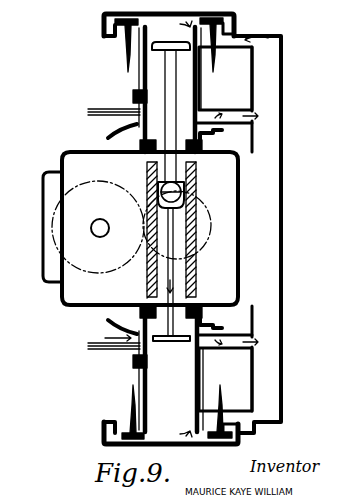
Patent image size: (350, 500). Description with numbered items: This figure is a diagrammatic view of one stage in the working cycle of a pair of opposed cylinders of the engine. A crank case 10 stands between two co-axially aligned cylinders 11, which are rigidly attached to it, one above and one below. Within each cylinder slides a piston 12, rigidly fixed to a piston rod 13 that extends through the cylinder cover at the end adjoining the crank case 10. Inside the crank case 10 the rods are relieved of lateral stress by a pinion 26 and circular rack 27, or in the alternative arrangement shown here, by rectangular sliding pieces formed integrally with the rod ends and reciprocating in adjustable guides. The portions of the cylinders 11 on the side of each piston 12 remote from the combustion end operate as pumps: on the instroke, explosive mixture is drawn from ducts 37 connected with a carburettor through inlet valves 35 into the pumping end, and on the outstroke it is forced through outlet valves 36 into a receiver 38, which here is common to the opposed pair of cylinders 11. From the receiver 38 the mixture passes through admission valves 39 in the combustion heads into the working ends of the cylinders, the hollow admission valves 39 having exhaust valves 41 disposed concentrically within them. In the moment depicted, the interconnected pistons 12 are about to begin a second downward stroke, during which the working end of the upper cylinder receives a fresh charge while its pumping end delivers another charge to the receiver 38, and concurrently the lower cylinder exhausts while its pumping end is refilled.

The crank case 10 is at (68, 308).
The cylinder 11 is at (168, 229).
The piston 12 is at (158, 54).
The piston rod 13 is at (170, 85).
The pinion 26 is at (176, 267).
The circular rack 27 is at (183, 184).
The inlet valve 35 is at (112, 124).
The outlet valve 36 is at (223, 132).
The duct 37 is at (133, 98).
The receiver 38 is at (276, 261).
The admission valve 39 is at (224, 20).
The exhaust valve 41 is at (107, 33).